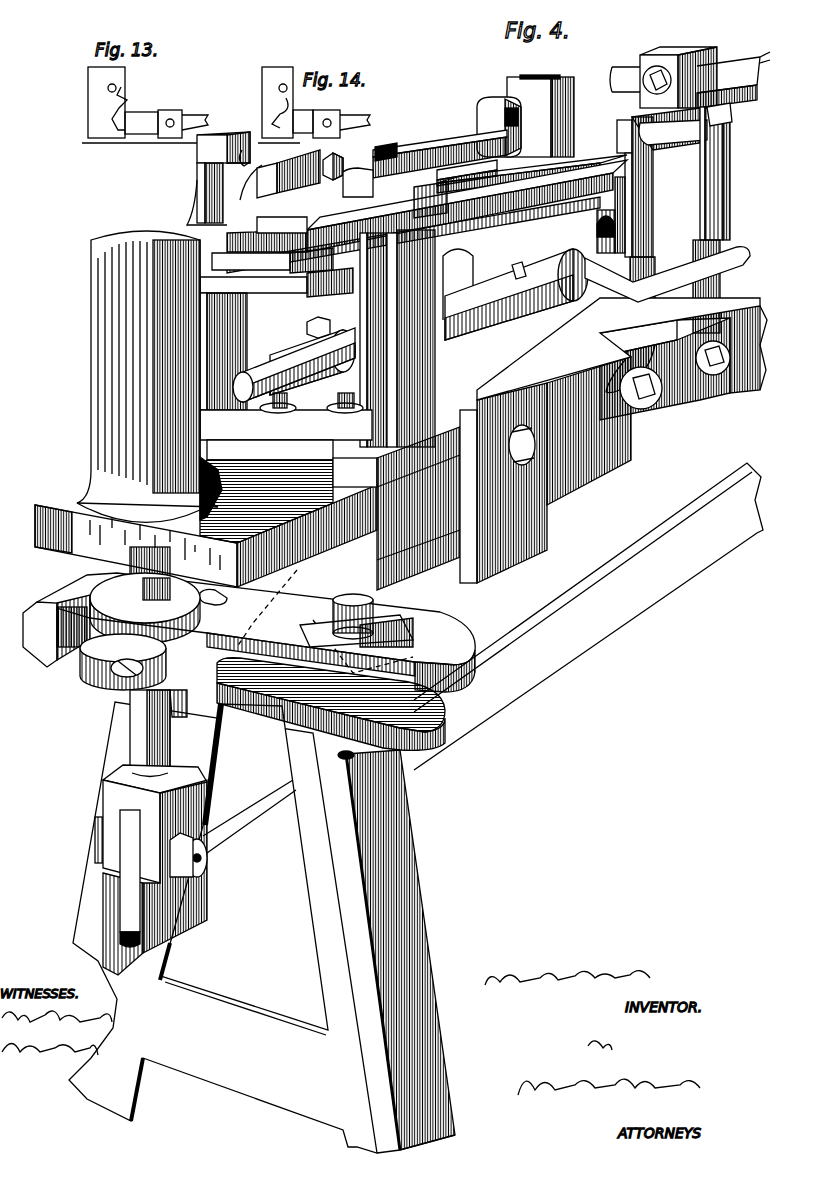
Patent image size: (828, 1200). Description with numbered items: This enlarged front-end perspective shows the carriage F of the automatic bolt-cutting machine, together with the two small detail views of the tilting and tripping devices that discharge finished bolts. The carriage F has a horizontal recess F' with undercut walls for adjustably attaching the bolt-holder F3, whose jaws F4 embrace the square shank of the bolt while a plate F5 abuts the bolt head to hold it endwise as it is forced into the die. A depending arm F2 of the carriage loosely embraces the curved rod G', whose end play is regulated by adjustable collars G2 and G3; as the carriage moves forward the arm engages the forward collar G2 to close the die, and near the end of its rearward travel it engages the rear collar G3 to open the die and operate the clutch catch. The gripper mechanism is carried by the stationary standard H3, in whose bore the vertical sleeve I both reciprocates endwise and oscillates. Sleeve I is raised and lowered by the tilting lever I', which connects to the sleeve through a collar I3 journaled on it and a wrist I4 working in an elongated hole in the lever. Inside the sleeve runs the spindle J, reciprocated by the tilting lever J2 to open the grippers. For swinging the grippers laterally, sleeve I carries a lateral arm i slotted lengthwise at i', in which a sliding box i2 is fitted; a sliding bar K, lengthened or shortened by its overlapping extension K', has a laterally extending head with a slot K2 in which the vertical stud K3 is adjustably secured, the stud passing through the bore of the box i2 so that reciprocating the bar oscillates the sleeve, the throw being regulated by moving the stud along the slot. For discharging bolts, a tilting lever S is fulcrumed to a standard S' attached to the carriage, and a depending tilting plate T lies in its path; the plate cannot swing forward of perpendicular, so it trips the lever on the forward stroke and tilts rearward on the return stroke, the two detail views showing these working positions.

In FIG. 13, the depending tilting plate T is at (125, 94).
In FIG. 14, the depending tilting plate T is at (289, 99).
In FIG. 4, the depending tilting plate T is at (246, 158).
In FIG. 4, the carriage F is at (413, 310).
In FIG. 4, the horizontal recess F' is at (272, 245).
In FIG. 4, the depending arm F2 is at (458, 284).
In FIG. 4, the bolt-holder F3 is at (500, 190).
In FIG. 4, the jaws F4 is at (574, 78).
In FIG. 4, the plate F5 is at (540, 116).
In FIG. 4, the tilting lever S is at (224, 178).
In FIG. 4, the standard S' is at (352, 164).
In FIG. 4, the stationary standard H3 is at (140, 411).
In FIG. 4, the base plate A' is at (206, 522).
In FIG. 4, the overlapping member or extension K' is at (396, 508).
In FIG. 4, the sliding bar K is at (613, 440).
In FIG. 4, the slot K2 is at (292, 696).
In FIG. 4, the vertical wrist or stud K3 is at (353, 613).
In FIG. 4, the rod G' is at (298, 370).
In FIG. 4, the forward adjustable collar G2 is at (345, 330).
In FIG. 4, the rear adjustable collar G3 is at (545, 268).
In FIG. 4, the vertical sleeve I is at (145, 608).
In FIG. 4, the tilting lever I' is at (56, 623).
In FIG. 4, the collar I3 is at (123, 664).
In FIG. 4, the wrist I4 is at (65, 660).
In FIG. 4, the spindle J is at (155, 821).
In FIG. 4, the tilting lever J2 is at (416, 808).
In FIG. 4, the lateral arm i is at (256, 632).
In FIG. 4, the slot i' is at (325, 621).
In FIG. 4, the sliding box i2 is at (388, 620).